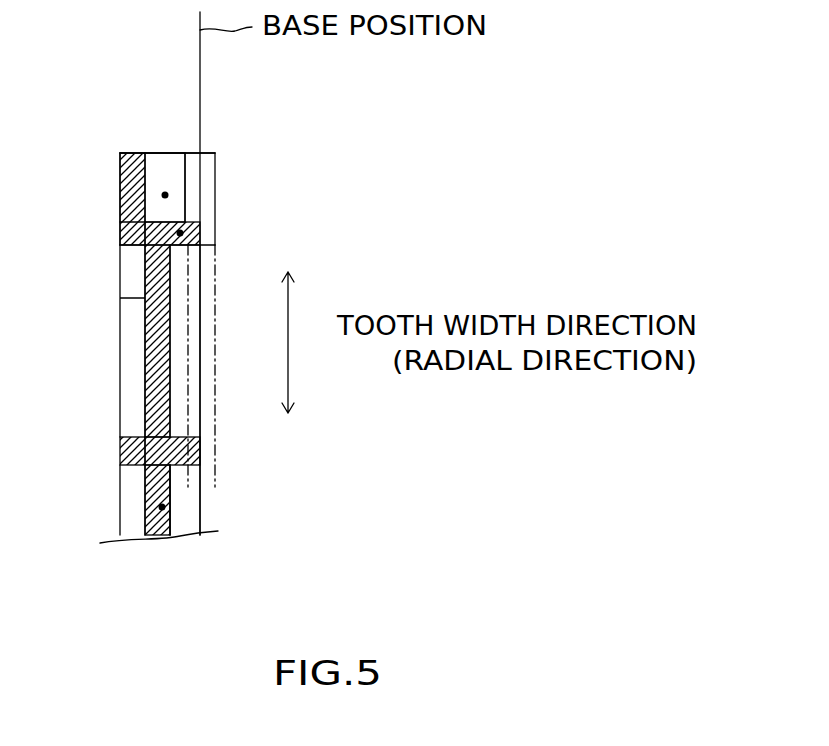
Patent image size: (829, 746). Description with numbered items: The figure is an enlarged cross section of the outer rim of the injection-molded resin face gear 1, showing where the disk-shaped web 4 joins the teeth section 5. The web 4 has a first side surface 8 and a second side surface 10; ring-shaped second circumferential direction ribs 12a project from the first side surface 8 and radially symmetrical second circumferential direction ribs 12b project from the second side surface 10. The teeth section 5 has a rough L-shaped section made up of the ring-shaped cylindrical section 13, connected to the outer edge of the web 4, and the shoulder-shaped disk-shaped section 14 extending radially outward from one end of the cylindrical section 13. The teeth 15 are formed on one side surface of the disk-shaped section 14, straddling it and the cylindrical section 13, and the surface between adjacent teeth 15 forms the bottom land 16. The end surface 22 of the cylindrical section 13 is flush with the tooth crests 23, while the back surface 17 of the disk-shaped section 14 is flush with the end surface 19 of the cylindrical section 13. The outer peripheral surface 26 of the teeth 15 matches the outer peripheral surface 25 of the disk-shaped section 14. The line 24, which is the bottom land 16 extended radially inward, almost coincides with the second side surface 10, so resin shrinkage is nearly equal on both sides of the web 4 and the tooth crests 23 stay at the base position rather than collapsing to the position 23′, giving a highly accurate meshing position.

The injection-molded resin face gear 1 is at (101, 157).
The web 4 is at (162, 507).
The teeth section 5 is at (174, 152).
The first side surface 8 is at (170, 327).
The second side surface 10 is at (145, 298).
The second circumferential direction ribs 12a is at (200, 450).
The second circumferential direction ribs 12b is at (120, 446).
The cylindrical section 13 is at (180, 233).
The disk-shaped section 14 is at (122, 157).
The teeth 15 is at (165, 195).
The bottom land 16 is at (148, 168).
The back surface 17 is at (120, 178).
The end surface 19 is at (120, 238).
The end surface 22 is at (180, 234).
The tooth crests 23 is at (215, 158).
The position 23′ is at (216, 190).
The line 24 is at (120, 219).
The outer peripheral surface 25 is at (140, 156).
The outer peripheral surface 26 is at (178, 146).